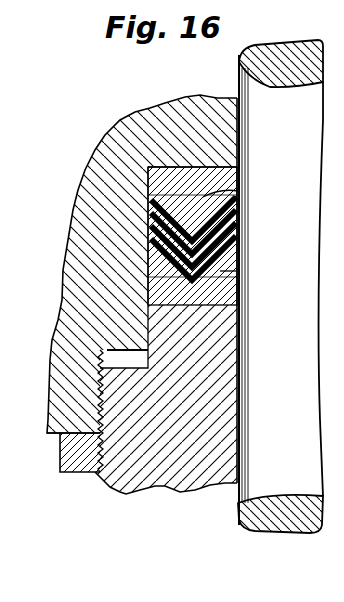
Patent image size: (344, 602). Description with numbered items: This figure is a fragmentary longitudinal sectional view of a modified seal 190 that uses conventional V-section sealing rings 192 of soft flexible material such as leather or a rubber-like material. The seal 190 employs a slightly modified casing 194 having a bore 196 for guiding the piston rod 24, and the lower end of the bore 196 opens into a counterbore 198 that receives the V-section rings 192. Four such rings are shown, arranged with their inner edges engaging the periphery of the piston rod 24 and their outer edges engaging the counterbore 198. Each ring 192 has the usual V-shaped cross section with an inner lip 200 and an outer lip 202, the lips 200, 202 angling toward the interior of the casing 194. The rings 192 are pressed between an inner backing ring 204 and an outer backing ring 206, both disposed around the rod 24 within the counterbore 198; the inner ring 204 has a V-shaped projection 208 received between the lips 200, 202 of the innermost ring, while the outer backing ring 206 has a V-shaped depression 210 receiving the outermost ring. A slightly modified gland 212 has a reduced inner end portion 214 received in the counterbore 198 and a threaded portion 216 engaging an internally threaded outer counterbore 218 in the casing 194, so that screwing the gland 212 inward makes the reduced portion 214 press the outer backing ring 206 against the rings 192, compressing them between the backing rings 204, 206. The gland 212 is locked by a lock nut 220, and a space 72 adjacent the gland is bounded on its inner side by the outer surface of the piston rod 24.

The modified seal 190 is at (101, 492).
The V-section sealing rings 192 is at (228, 250).
The casing 194 is at (117, 133).
The bore 196 is at (241, 122).
The counterbore 198 is at (150, 280).
The inner lip 200 is at (238, 191).
The outer lip 202 is at (150, 167).
The inner backing ring 204 is at (168, 172).
The outer backing ring 206 is at (223, 293).
The V-shaped projection 208 is at (236, 168).
The V-shaped depression 210 is at (220, 271).
The gland 212 is at (168, 483).
The reduced inner end portion 214 is at (218, 342).
The threaded portion 216 is at (100, 395).
The internally threaded outer counterbore 218 is at (107, 348).
The lock nut 220 is at (78, 472).
The space 72 is at (236, 428).
The piston rod 24 is at (260, 522).